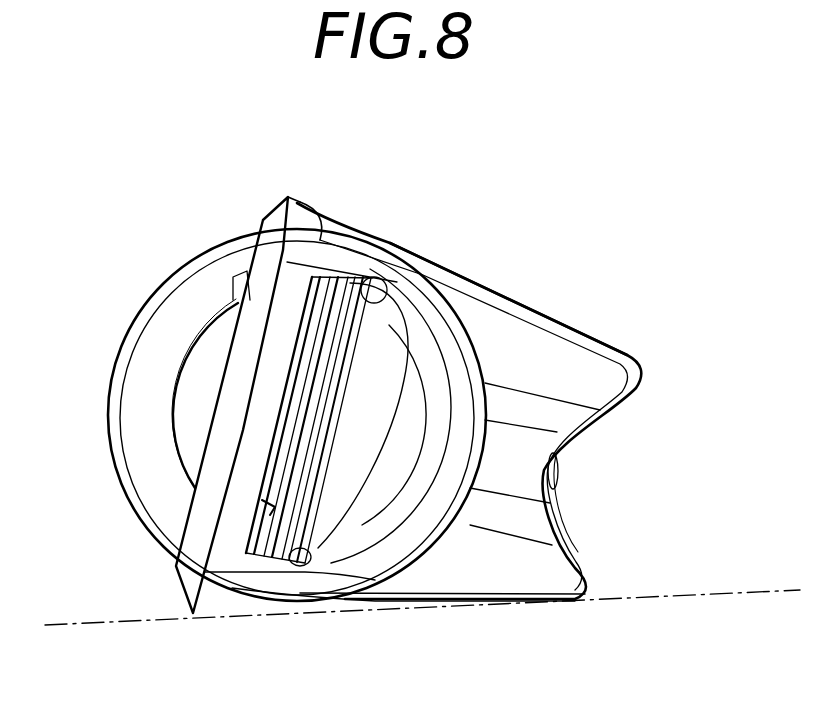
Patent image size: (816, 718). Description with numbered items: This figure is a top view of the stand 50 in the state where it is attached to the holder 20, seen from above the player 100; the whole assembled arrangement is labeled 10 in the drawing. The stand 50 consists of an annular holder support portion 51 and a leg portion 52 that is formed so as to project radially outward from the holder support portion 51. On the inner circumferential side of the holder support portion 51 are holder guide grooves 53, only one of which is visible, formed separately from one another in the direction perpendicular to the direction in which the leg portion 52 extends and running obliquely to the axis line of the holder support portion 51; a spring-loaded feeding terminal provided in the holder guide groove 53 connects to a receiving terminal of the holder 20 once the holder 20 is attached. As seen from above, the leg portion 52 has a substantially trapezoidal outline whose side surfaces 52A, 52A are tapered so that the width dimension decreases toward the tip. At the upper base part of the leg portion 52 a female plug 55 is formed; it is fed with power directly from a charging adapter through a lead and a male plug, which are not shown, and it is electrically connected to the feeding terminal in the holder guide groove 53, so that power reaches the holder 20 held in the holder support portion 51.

The cutting device 10 is at (189, 239).
The holder 20 is at (370, 326).
The stand 50 is at (142, 497).
The holder support portion 51 is at (322, 588).
The leg portion 52 is at (560, 370).
The side surfaces 52A is at (543, 318).
The holder guide groove 53 is at (392, 372).
The female plug 55 is at (556, 472).
The player 100 is at (220, 597).